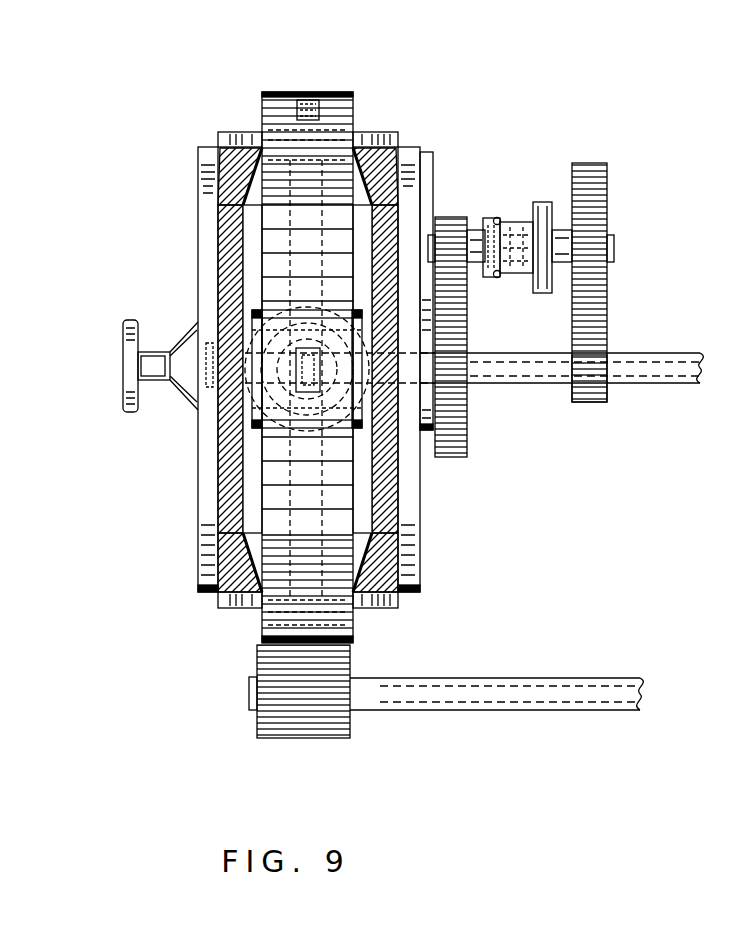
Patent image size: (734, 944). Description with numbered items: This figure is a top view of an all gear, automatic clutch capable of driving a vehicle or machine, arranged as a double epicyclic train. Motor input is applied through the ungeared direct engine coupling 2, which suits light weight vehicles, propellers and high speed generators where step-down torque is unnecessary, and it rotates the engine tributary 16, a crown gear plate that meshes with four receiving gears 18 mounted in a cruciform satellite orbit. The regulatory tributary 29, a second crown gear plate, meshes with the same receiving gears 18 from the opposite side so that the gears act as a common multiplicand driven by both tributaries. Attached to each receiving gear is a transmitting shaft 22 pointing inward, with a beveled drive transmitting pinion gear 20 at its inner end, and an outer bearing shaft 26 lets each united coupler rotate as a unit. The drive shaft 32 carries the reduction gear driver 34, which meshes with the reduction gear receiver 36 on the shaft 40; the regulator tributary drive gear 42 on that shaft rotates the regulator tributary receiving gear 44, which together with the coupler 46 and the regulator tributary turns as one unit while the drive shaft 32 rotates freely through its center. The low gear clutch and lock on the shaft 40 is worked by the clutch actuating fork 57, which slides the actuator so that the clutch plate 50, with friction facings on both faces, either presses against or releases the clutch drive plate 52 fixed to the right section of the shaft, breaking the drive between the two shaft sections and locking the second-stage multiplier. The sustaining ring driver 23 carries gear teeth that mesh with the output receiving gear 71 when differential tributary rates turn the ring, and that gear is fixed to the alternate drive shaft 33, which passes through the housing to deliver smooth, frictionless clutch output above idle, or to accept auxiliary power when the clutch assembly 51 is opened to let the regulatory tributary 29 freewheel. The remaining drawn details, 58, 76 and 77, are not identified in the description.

The direct engine coupling 2 is at (120, 362).
The engine tributary 16 is at (198, 560).
The receiving gears 18 is at (225, 133).
The drive transmitting pinion gears 20 is at (290, 300).
The transmitting shafts 22 is at (300, 228).
The ring driver 23 is at (313, 92).
The outer bearing shaft 26 is at (352, 112).
The regulatory tributary 29 is at (418, 592).
The drive shaft 32 is at (655, 385).
The alternate drive shaft 33 is at (500, 712).
The reduction gear driver 34 is at (588, 402).
The reduction gear receiver 36 is at (637, 309).
The shaft 40 is at (614, 248).
The regulator tributary drive gear 42 is at (438, 218).
The regulator tributary receiving gear 44 is at (480, 285).
The coupler 46 is at (433, 432).
The clutch plate 50 is at (515, 220).
The clutch assembly 51 is at (483, 222).
The clutch drive plate 52 is at (548, 202).
The clutch actuating fork 57 is at (498, 280).
The coupling ring 58 is at (487, 213).
The output receiving gear 71 is at (257, 722).
The center hub 76 is at (262, 420).
The pin 77 is at (212, 350).